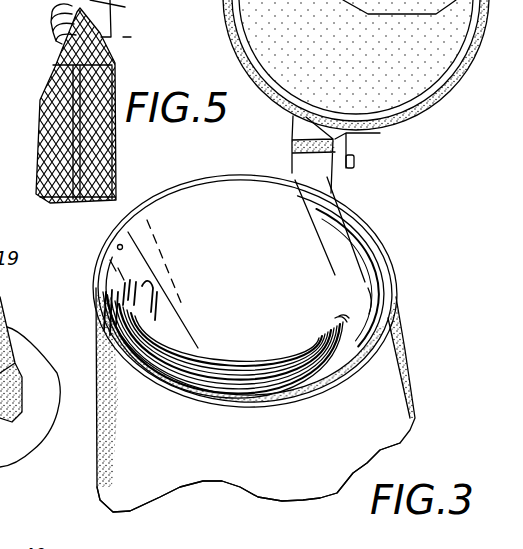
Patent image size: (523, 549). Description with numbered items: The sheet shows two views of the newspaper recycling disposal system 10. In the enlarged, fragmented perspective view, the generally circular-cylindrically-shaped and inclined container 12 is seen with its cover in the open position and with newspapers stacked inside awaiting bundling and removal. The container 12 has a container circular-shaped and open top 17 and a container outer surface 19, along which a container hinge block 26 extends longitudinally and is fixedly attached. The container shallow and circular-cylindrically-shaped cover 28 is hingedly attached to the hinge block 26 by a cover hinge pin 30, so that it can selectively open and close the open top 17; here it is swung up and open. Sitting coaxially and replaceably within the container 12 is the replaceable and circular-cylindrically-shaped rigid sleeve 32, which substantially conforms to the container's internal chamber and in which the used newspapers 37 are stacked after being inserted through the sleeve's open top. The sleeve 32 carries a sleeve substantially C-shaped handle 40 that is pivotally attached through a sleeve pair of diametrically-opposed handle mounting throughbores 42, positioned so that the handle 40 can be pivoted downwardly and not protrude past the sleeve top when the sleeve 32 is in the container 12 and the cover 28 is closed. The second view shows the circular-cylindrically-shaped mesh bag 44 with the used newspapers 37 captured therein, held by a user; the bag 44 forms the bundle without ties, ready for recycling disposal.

In FIG. 3, the newspaper recycling disposal system 10 is at (148, 199).
In FIG. 3, the generally circular-cylindrically-shaped and inclined container 12 is at (406, 310).
In FIG. 3, the container circular-shaped and open top 17 is at (96, 346).
In FIG. 3, the container outer surface 19 is at (102, 459).
In FIG. 3, the container hinge block 26 is at (289, 166).
In FIG. 3, the container shallow and circular-cylindrically-shaped cover 28 is at (343, 62).
In FIG. 3, the cover hinge pin 30 is at (358, 160).
In FIG. 3, the replaceable and circular-cylindrically-shaped rigid sleeve 32 is at (105, 250).
In FIG. 5, the used newspapers 37 is at (43, 113).
In FIG. 3, the used newspapers 37 is at (214, 371).
In FIG. 3, the sleeve substantially C-shaped handle 40 is at (388, 285).
In FIG. 3, the sleeve pair of diametrically-opposed handle mounting throughbores 42 is at (368, 312).
In FIG. 5, the circular-cylindrically-shaped mesh bag 44 is at (55, 82).